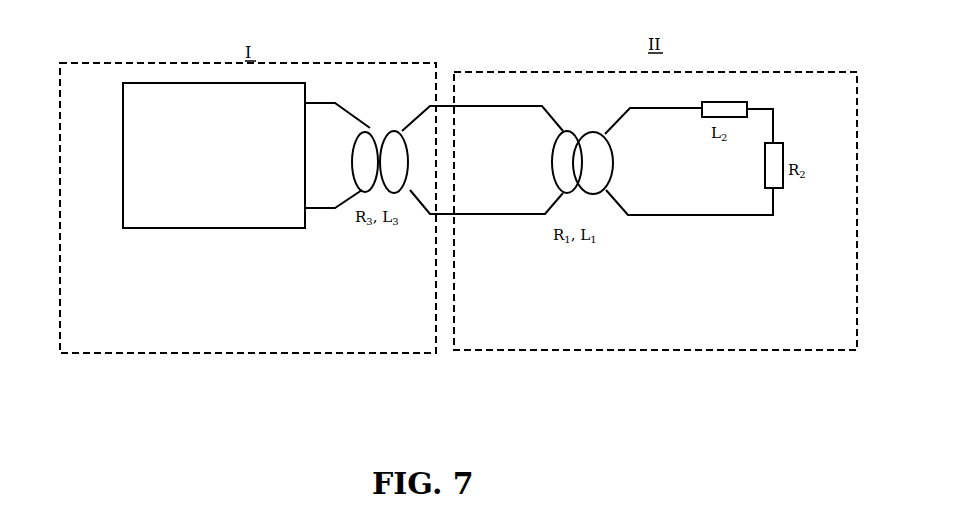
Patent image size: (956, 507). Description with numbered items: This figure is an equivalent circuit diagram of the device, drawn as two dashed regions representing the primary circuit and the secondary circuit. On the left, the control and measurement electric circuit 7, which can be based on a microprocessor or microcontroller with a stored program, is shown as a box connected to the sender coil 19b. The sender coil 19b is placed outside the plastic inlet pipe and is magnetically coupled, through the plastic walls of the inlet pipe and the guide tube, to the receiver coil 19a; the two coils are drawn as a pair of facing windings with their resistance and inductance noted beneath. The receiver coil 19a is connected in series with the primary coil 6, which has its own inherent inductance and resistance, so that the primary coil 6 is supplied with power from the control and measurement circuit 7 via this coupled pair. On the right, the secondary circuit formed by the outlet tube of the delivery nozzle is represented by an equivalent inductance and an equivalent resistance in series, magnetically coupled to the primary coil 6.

The control and measurement electric circuit 7 is at (212, 213).
The receiver coil 19a is at (394, 130).
The sender coil 19b is at (366, 130).
The primary coil 6 is at (574, 118).